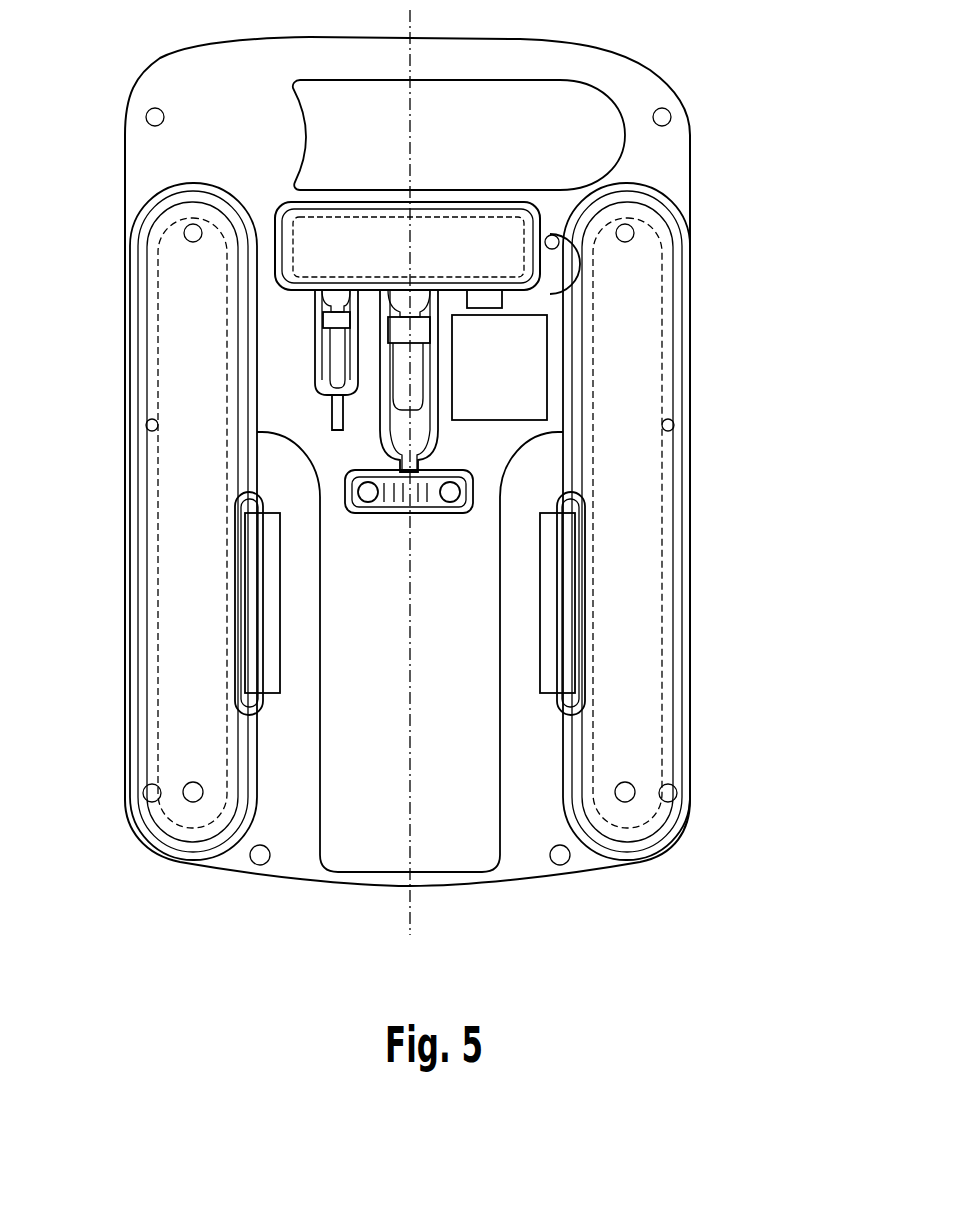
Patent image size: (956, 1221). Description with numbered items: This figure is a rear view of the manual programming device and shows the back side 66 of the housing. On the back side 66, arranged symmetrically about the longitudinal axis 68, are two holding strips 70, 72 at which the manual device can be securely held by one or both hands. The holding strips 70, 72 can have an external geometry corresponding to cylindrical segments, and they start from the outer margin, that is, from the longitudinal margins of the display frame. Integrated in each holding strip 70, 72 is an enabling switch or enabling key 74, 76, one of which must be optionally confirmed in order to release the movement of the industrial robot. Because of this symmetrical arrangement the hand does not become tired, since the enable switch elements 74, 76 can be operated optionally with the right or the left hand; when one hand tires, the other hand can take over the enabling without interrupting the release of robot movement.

The back side 66 is at (668, 153).
The longitudinal axis 68 is at (410, 160).
The holding strip 70 is at (155, 618).
The holding strip 72 is at (670, 618).
The enabling switch 74 is at (270, 620).
The enabling switch 76 is at (548, 620).